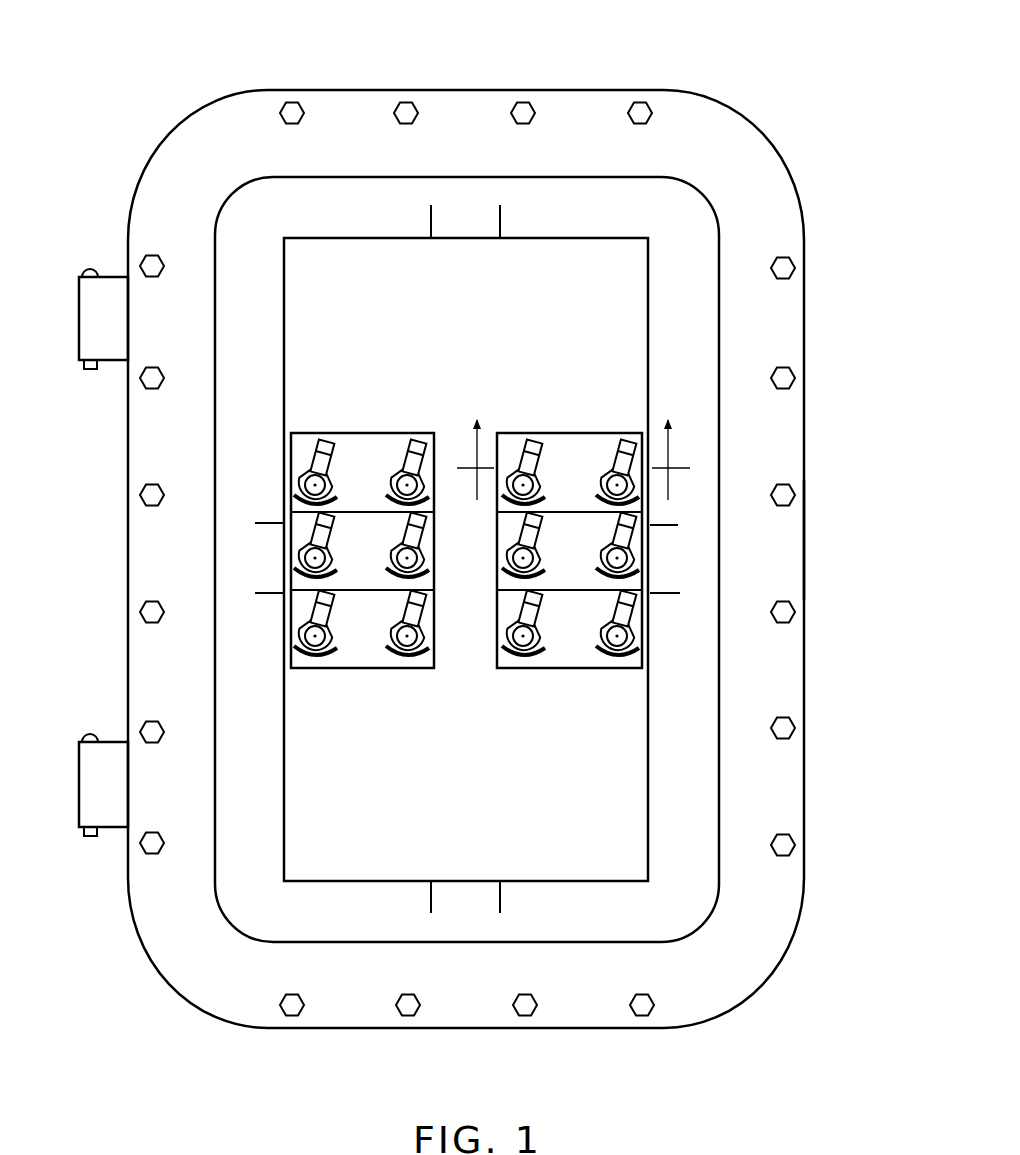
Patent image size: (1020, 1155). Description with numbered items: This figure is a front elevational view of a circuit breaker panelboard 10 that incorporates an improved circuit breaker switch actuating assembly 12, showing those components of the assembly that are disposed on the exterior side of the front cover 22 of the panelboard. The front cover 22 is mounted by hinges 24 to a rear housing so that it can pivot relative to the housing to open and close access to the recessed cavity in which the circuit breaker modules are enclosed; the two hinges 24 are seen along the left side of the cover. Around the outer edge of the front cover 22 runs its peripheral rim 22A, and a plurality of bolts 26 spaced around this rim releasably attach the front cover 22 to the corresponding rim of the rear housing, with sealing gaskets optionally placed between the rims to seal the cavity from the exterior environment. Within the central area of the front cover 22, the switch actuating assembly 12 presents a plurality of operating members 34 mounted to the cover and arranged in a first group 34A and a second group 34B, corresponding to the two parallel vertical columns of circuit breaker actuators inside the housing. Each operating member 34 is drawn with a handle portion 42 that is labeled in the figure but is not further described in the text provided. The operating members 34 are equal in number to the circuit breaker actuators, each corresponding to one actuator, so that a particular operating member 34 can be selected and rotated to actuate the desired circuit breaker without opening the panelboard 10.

The circuit breaker panelboard 10 is at (752, 80).
The circuit breaker switch actuating assembly 12 is at (616, 352).
The front cover 22 is at (772, 977).
The peripheral rim 22A is at (806, 538).
The hinge 24 is at (112, 277).
The bolt 26 is at (406, 101).
The operating member 34 is at (375, 680).
The first group of operating members 34A is at (503, 428).
The second group of operating members 34B is at (627, 428).
The toggle switch 42 is at (468, 465).